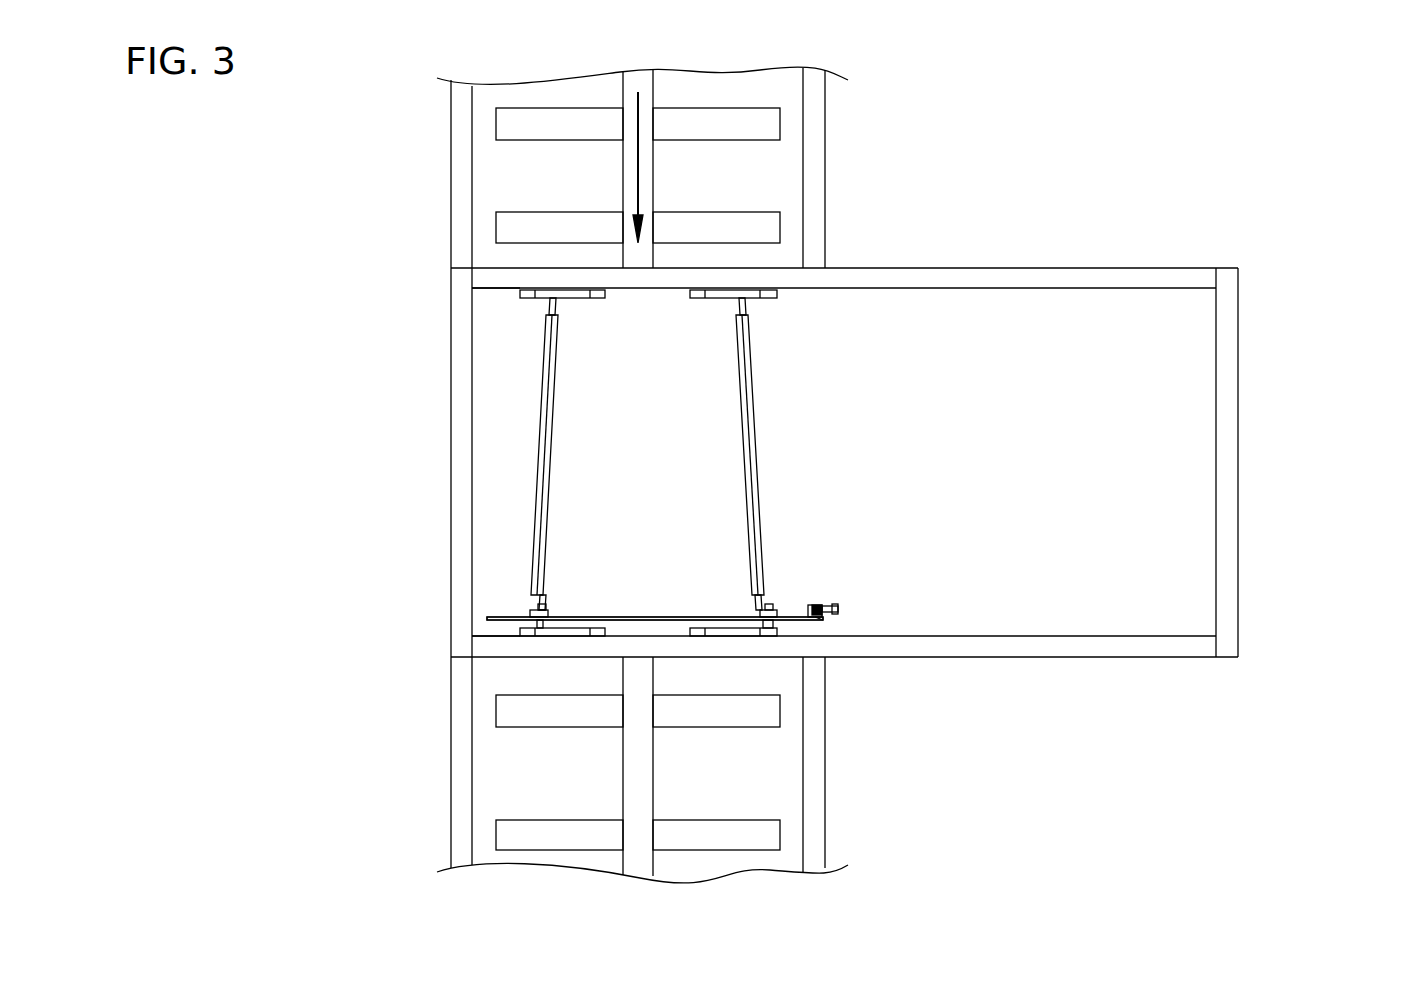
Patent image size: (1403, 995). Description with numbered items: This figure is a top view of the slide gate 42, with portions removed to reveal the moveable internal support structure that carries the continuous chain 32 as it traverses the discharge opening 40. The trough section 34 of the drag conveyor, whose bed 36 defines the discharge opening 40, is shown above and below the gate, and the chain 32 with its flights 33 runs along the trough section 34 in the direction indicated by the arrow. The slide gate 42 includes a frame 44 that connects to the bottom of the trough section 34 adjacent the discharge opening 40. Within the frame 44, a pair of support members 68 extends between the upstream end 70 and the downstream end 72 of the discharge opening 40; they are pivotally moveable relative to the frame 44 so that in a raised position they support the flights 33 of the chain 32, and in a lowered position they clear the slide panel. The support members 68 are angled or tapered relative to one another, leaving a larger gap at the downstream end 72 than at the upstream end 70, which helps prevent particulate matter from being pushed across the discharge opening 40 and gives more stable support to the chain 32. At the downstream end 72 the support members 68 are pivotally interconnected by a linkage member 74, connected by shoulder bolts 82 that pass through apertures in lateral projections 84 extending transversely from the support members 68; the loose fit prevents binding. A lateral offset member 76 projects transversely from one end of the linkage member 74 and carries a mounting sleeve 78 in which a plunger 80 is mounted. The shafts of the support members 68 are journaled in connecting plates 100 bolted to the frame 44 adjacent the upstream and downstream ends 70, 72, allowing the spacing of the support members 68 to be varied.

The continuous chain 32 is at (623, 157).
The flights 33 is at (540, 140).
The trough section 34 is at (825, 118).
The bed 36 is at (778, 183).
The discharge opening 40 is at (500, 438).
The slide gate 42 is at (1256, 451).
The frame 44 is at (1238, 267).
The support members 68 is at (548, 443).
The upstream end 70 is at (487, 293).
The downstream end 72 is at (480, 635).
The linkage member 74 is at (623, 618).
The lateral offset member 76 is at (823, 618).
The mounting sleeve 78 is at (822, 603).
The plunger 80 is at (810, 605).
The shoulder bolts 82 is at (545, 612).
The lateral projections 84 is at (548, 613).
The connecting plates 100 is at (582, 300).